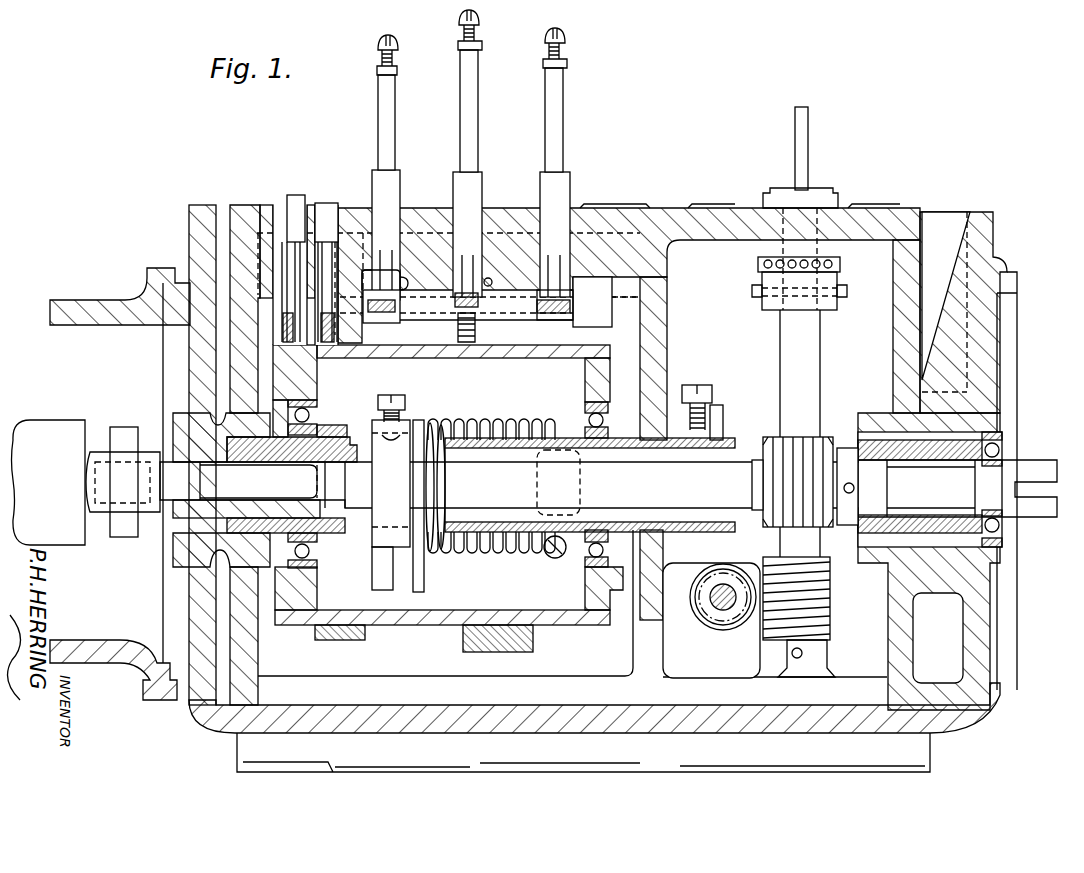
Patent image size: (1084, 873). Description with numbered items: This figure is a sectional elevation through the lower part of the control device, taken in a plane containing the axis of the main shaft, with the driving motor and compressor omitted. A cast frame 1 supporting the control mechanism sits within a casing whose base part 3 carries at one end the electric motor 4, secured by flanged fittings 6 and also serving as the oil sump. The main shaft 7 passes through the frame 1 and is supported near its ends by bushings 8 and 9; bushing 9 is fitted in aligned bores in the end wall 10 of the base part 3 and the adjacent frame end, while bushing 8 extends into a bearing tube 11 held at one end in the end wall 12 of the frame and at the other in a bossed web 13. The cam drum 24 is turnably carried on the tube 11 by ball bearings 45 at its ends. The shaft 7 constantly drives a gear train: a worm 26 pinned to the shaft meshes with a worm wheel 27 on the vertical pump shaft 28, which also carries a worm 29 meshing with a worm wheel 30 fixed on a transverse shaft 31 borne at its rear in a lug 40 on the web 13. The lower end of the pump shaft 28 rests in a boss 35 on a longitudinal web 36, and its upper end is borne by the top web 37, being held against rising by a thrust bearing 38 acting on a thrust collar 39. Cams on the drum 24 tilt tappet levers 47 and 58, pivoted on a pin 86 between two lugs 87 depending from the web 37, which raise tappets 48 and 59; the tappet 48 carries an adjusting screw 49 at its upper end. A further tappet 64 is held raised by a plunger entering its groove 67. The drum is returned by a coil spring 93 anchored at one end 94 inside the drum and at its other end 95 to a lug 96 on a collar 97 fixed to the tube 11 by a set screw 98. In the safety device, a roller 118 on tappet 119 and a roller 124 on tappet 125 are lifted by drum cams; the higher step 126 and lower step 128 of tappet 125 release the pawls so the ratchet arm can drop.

The cast frame 1 is at (618, 225).
The base part 3 is at (965, 715).
The electric motor 4 is at (86, 482).
The flanged fittings 6 is at (135, 668).
The main shaft 7 is at (608, 488).
The bushing 8 is at (330, 448).
The bushing 9 is at (878, 445).
The end wall 10 is at (955, 406).
The bearing tube 11 is at (546, 437).
The end wall 12 is at (245, 372).
The bossed web 13 is at (650, 340).
The cam drum 24 is at (418, 626).
The worm 26 is at (770, 448).
The worm wheel 27 is at (760, 488).
The vertical pump shaft 28 is at (795, 366).
The worm 29 is at (832, 594).
The worm wheel 30 is at (695, 622).
The transverse shaft 31 is at (724, 608).
The boss 35 is at (808, 670).
The longitudinal web 36 is at (445, 615).
The top web 37 is at (868, 232).
The thrust bearing 38 is at (832, 262).
The thrust collar 39 is at (830, 310).
The lug 40 is at (727, 581).
The ball bearings 45 is at (305, 557).
The tappet lever 47 is at (545, 314).
The tappet 48 is at (562, 188).
The adjusting screw 49 is at (470, 40).
The tappet lever 58 is at (400, 315).
The tappet 59 is at (385, 190).
The tappet 64 is at (465, 190).
The groove 67 is at (456, 315).
The pin 86 is at (542, 314).
The lugs 87 is at (338, 247).
The coil spring 93 is at (447, 425).
The spring end 94 is at (548, 553).
The spring end 95 is at (413, 590).
The lug 96 is at (395, 563).
The collar 97 is at (391, 483).
The set screw 98 is at (398, 403).
The roller 118 is at (381, 280).
The tappet 119 is at (324, 203).
The roller 124 is at (317, 355).
The tappet 125 is at (300, 233).
The higher step 126 is at (291, 195).
The lower step 128 is at (280, 242).